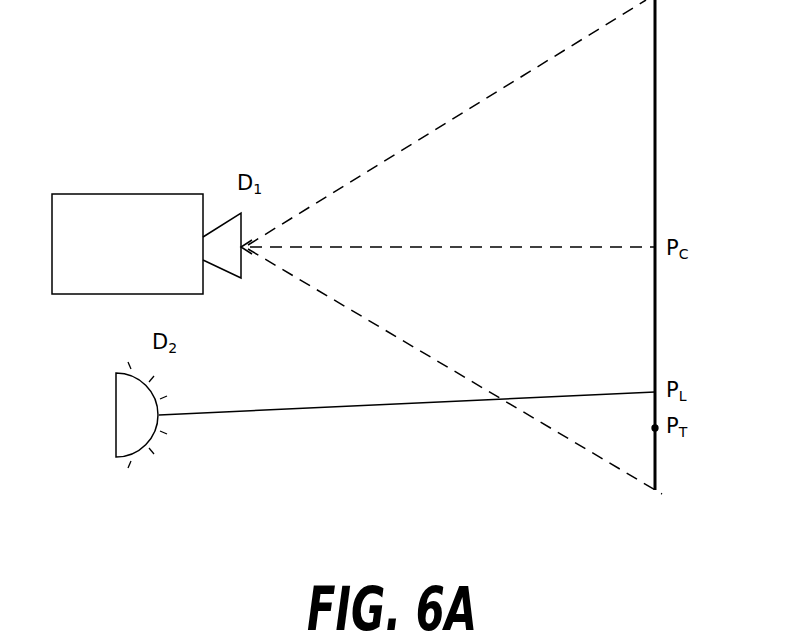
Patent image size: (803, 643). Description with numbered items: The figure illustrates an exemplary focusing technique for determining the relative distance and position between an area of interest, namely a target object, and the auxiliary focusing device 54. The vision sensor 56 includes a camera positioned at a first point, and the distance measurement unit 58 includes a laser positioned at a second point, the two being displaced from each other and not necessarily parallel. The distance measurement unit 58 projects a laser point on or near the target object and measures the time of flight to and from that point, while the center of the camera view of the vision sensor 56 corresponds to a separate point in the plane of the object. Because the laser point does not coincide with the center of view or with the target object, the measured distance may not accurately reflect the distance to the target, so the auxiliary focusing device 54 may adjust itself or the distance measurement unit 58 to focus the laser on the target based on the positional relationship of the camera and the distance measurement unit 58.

The auxiliary focusing device 54 is at (114, 55).
The vision sensor 56 is at (112, 257).
The distance measurement unit 58 is at (116, 413).